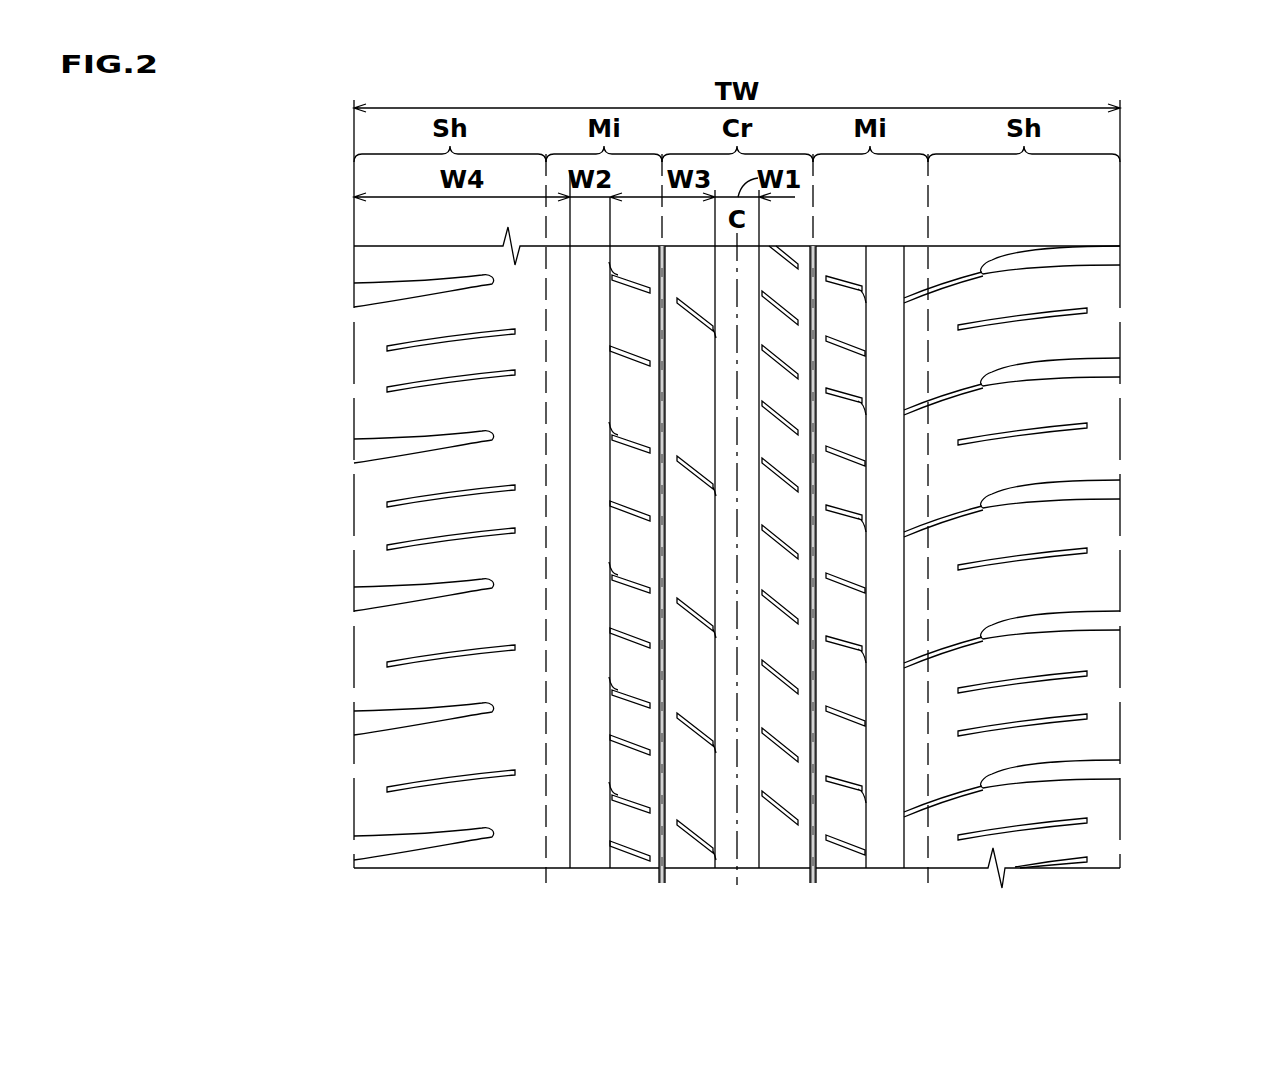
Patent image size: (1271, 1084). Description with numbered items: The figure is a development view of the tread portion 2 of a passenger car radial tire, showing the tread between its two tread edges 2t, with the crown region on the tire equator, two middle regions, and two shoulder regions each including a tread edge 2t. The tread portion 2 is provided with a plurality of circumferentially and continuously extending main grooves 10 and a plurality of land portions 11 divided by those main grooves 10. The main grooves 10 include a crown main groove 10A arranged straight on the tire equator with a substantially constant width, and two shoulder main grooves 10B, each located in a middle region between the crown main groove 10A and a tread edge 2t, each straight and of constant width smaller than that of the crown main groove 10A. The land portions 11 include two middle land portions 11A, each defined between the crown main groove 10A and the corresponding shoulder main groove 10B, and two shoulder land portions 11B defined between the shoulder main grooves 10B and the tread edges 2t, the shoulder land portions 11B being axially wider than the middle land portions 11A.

The tread portion 2 is at (1159, 203).
The tread edge 2t is at (354, 275).
The main grooves 10 is at (242, 405).
The crown main groove 10A is at (725, 563).
The shoulder main groove 10B is at (588, 423).
The land portions 11 is at (995, 913).
The middle land portion 11A is at (688, 850).
The shoulder land portion 11B is at (523, 823).